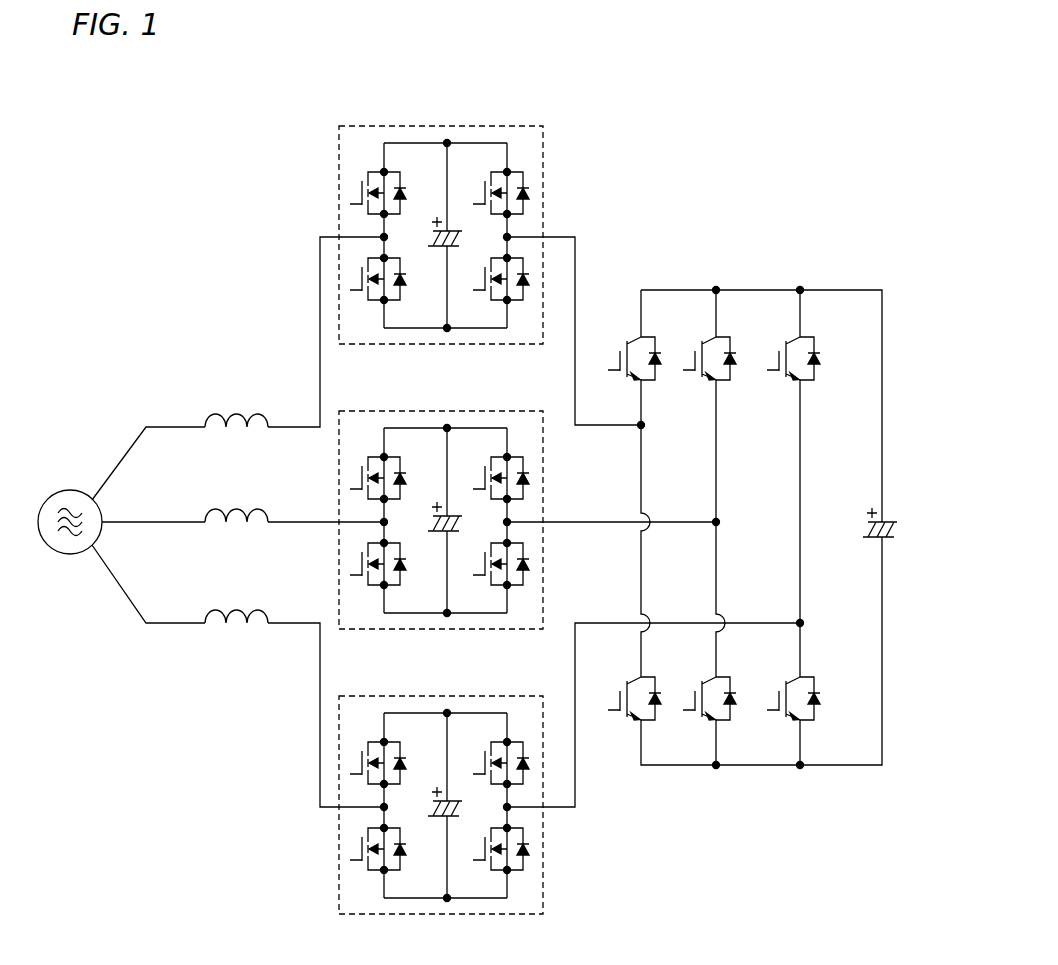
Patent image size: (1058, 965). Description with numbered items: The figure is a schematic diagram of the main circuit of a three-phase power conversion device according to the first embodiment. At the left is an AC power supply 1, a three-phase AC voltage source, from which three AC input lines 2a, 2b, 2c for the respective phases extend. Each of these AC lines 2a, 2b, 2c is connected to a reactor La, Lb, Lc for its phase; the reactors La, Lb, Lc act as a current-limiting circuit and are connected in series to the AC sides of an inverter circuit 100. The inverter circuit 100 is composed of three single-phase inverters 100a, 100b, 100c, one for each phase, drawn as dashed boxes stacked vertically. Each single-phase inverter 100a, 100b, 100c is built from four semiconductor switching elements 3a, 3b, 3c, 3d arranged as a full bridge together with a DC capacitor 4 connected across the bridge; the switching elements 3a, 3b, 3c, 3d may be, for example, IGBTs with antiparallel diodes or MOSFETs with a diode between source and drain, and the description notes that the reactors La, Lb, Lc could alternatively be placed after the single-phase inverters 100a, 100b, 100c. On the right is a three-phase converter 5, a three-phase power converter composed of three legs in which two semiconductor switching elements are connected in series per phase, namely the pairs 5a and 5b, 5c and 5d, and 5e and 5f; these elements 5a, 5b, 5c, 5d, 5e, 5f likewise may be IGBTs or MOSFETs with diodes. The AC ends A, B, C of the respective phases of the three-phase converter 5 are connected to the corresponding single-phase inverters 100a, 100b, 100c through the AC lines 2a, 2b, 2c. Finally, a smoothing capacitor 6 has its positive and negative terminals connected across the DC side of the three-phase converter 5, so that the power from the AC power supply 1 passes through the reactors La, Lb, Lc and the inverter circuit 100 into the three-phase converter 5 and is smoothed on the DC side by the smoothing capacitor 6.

The AC power supply 1 is at (55, 494).
The AC input line 2a is at (146, 426).
The AC input line 2b is at (144, 522).
The AC input line 2c is at (146, 622).
The reactor La is at (226, 414).
The reactor Lb is at (224, 510).
The reactor Lc is at (224, 612).
The inverter circuit 100 is at (537, 93).
The single-phase inverter 100a is at (358, 126).
The single-phase inverter 100b is at (388, 411).
The single-phase inverter 100c is at (388, 696).
The semiconductor switching element 3a is at (364, 204).
The semiconductor switching element 3b is at (362, 290).
The semiconductor switching element 3c is at (527, 190).
The semiconductor switching element 3d is at (510, 302).
The DC capacitor 4 is at (455, 232).
The three-phase converter 5 is at (755, 245).
The semiconductor switching element 5a is at (662, 350).
The semiconductor switching element 5b is at (664, 690).
The semiconductor switching element 5c is at (737, 350).
The semiconductor switching element 5d is at (739, 690).
The semiconductor switching element 5e is at (821, 350).
The semiconductor switching element 5f is at (823, 690).
The smoothing capacitor 6 is at (892, 512).
The AC end A is at (639, 428).
The AC end B is at (714, 524).
The AC end C is at (803, 621).